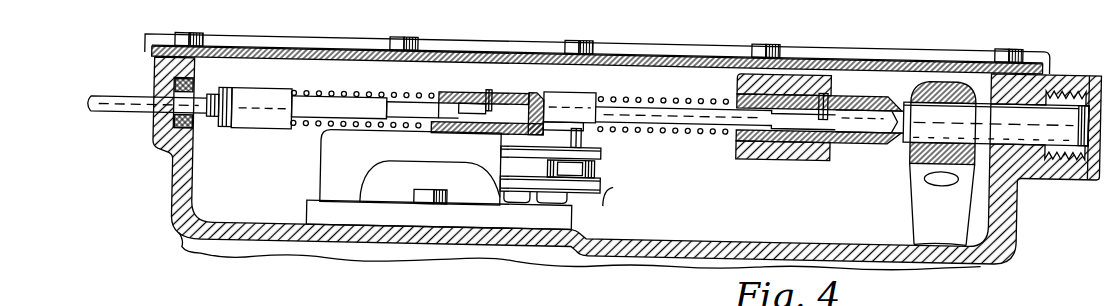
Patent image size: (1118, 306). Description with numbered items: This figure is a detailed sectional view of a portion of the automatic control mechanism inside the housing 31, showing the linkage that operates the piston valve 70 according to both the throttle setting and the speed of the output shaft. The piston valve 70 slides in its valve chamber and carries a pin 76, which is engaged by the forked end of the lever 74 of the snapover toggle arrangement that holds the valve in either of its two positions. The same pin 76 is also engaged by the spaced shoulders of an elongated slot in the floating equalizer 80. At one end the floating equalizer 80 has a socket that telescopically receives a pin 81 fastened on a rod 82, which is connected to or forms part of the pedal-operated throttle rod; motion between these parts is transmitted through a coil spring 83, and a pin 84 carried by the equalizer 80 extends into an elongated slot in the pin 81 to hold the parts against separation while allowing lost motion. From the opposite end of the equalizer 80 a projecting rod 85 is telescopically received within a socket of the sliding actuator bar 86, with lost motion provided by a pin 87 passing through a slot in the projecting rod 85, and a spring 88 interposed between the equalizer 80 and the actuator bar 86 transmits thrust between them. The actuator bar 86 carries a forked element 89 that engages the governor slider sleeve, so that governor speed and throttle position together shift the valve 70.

The housing 31 is at (1000, 198).
The piston valve 70 is at (598, 176).
The lever 74 is at (600, 161).
The pin 76 is at (590, 139).
The floating equalizer 80 is at (566, 88).
The pin 81 is at (410, 103).
The rod 82 is at (126, 113).
The coil spring 83 is at (340, 92).
The pin 84 is at (490, 86).
The projecting rod 85 is at (712, 122).
The actuator bar 86 is at (893, 128).
The pin 87 is at (832, 92).
The spring 88 is at (663, 90).
The forked element 89 is at (920, 182).